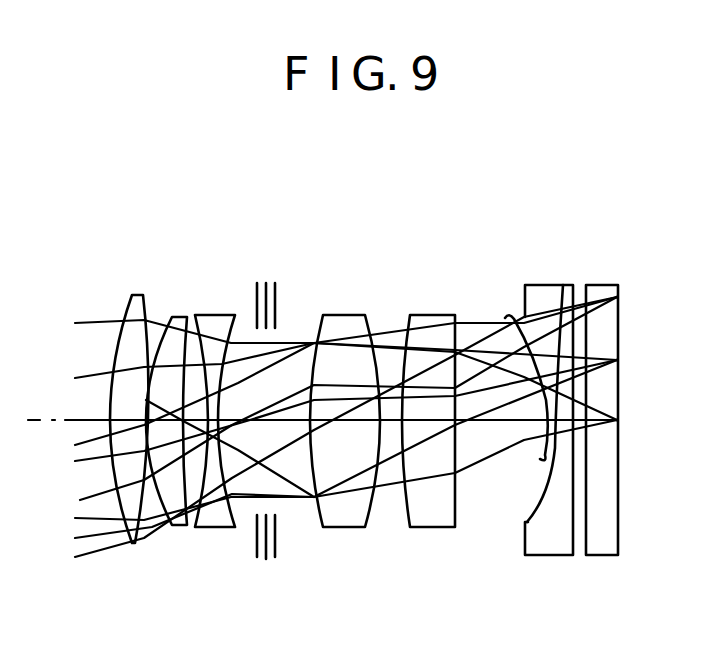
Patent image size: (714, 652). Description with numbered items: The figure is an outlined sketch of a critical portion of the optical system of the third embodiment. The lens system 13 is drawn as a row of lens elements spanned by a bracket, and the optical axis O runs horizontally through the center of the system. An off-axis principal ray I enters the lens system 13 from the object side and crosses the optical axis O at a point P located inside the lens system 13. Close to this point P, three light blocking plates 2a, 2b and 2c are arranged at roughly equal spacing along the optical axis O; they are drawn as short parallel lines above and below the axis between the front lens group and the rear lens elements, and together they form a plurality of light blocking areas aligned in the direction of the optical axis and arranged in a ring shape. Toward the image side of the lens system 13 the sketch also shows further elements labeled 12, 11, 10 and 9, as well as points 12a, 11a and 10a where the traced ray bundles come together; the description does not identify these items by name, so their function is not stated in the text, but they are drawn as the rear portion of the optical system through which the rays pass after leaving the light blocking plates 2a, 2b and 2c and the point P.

The lens system 13 is at (580, 243).
The lens frame 12 is at (538, 300).
The meniscus lens 11 is at (564, 286).
The thin optical element 10 is at (572, 444).
The cover plate 9 is at (618, 532).
The image point of oblique ray bundle 12a is at (618, 297).
The image point of intermediate ray bundle 11a is at (618, 360).
The on-axis image point 10a is at (618, 420).
The light blocking plate 2a is at (257, 557).
The light blocking plate 2b is at (266, 559).
The light blocking plate 2c is at (275, 557).
The optical axis O is at (43, 409).
The point P is at (262, 417).
The off-axis principal ray I is at (84, 498).